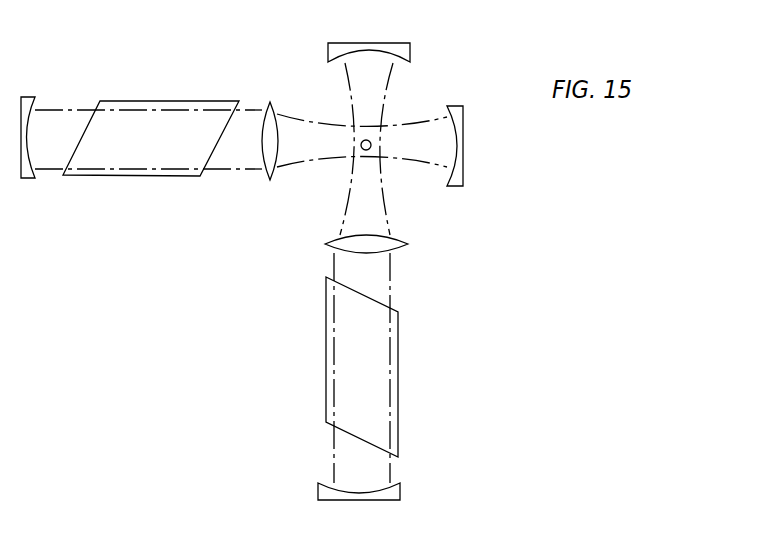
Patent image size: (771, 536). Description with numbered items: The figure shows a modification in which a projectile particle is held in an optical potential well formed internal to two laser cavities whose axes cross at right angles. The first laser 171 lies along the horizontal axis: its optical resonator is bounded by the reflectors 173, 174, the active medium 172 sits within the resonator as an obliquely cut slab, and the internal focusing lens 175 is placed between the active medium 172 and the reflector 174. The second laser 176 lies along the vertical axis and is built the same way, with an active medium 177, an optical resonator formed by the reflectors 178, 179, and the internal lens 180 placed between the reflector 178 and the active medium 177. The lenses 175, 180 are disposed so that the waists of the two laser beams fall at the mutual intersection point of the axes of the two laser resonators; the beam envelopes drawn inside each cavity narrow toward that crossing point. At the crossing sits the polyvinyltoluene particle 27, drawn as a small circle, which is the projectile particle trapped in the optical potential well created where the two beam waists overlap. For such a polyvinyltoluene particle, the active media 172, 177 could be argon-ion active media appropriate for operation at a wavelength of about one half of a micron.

The first laser 171 is at (181, 81).
The active medium 172 is at (150, 174).
The reflector 173 is at (32, 96).
The reflector 174 is at (464, 147).
The internal focusing lens 175 is at (268, 175).
The second laser 176 is at (477, 364).
The active medium 177 is at (326, 362).
The reflector 178 is at (405, 52).
The reflector 179 is at (402, 490).
The internal lens 180 is at (406, 244).
The polyvinyltoluene particle 27 is at (362, 150).